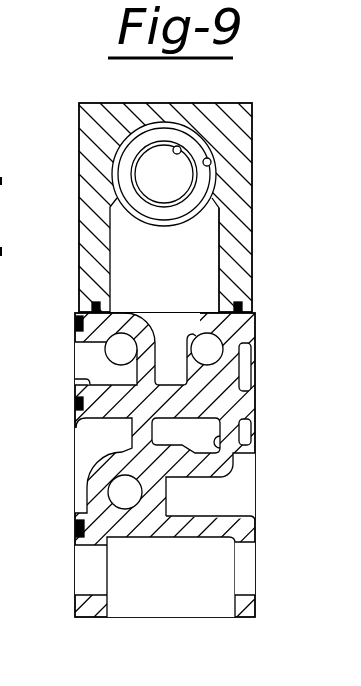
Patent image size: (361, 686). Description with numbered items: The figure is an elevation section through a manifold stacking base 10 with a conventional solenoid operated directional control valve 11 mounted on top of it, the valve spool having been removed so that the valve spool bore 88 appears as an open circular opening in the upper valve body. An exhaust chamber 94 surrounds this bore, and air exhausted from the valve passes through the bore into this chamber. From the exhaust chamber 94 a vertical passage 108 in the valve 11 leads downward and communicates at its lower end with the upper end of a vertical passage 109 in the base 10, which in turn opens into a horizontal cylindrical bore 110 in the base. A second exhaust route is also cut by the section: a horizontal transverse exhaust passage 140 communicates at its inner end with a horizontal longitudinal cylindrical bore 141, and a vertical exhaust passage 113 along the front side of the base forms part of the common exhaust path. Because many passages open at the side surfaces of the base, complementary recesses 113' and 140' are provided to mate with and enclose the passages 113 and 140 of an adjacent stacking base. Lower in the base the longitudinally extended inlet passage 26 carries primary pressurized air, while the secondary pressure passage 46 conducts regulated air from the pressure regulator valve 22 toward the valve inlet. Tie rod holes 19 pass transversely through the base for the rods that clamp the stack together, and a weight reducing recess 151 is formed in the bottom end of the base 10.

The manifold stacking base 10 is at (73, 602).
The solenoid operated directional control valve 11 is at (77, 195).
The tie rod holes 19 is at (77, 551).
The pressure regulator valve 22 is at (4, 88).
The inlet passage 26 is at (114, 488).
The secondary pressure passage 46 is at (220, 452).
The valve spool bore 88 is at (180, 147).
The exhaust chamber 94 is at (211, 161).
The vertical passage 108 is at (219, 244).
The vertical passage 109 is at (219, 312).
The cylindrical bore 110 is at (192, 333).
The vertical exhaust passage 113 is at (77, 465).
The complementary recess 113' is at (269, 410).
The transverse exhaust passage 140 is at (48, 363).
The complementary recess 140' is at (269, 350).
The cylindrical bore 141 is at (114, 350).
The weight reducing recess 151 is at (107, 608).